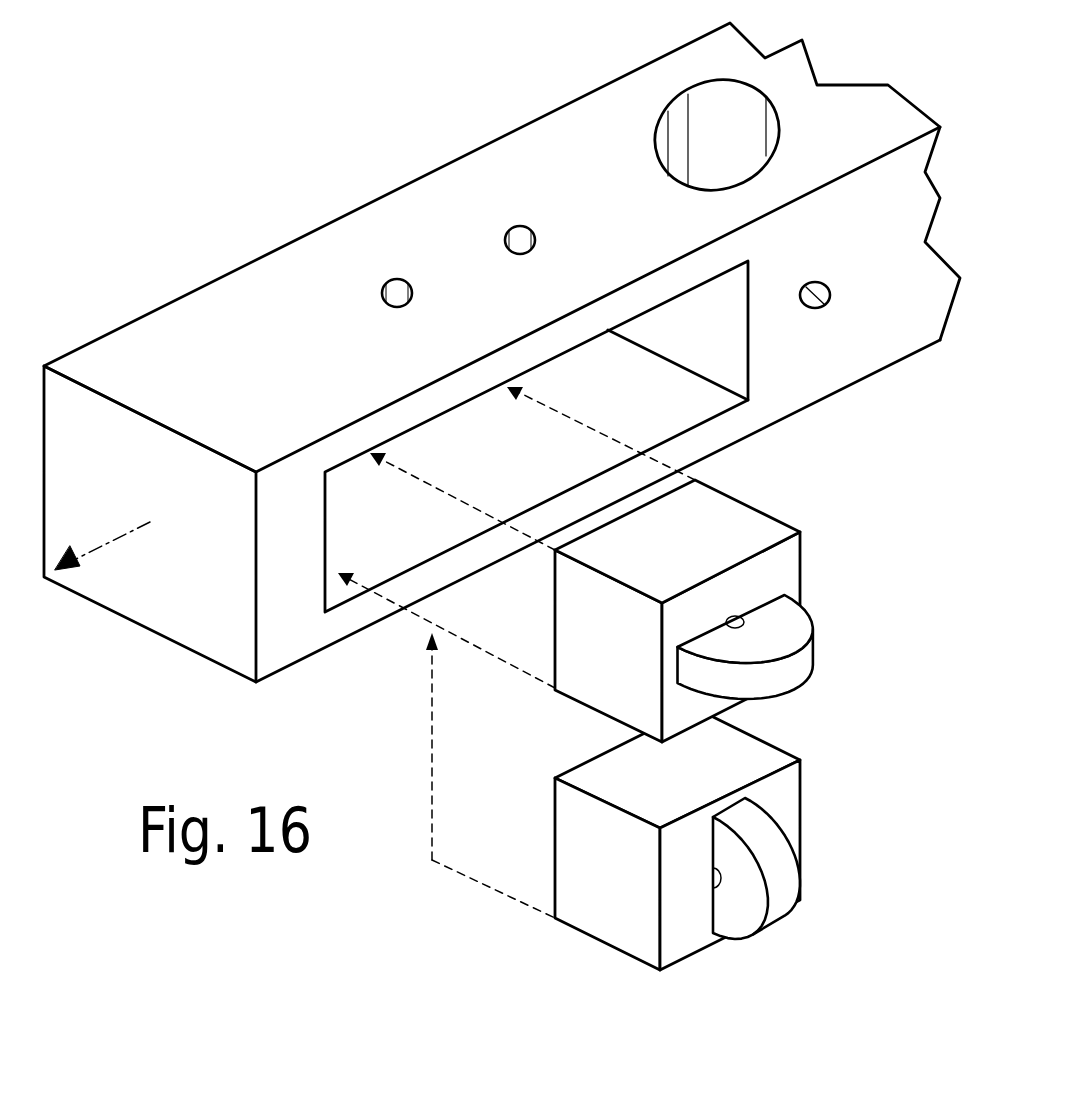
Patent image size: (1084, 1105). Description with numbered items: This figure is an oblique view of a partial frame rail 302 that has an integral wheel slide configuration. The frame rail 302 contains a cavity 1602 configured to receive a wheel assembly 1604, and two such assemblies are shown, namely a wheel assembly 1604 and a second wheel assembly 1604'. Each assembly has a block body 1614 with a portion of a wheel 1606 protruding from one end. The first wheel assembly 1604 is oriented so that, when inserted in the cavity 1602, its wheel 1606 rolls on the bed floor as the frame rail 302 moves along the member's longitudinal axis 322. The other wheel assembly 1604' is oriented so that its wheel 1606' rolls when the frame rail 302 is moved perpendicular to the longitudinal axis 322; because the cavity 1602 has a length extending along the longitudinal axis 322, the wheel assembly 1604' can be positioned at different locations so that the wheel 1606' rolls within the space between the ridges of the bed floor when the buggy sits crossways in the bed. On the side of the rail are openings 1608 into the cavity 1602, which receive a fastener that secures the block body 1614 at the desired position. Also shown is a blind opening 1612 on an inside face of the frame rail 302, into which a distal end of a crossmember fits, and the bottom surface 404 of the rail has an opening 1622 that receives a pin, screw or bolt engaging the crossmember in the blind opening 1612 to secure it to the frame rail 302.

The frame rail 302 is at (264, 256).
The bottom surface 404 is at (896, 213).
The longitudinal axis 322 is at (137, 530).
The cavity 1602 is at (748, 375).
The openings 1608 is at (537, 238).
The blind opening 1612 is at (655, 153).
The opening 1622 is at (830, 295).
The block body 1614 is at (753, 508).
The wheel assembly 1604 is at (723, 609).
The wheel 1606 is at (790, 647).
The wheel assembly 1604' is at (729, 839).
The wheel 1606' is at (803, 868).